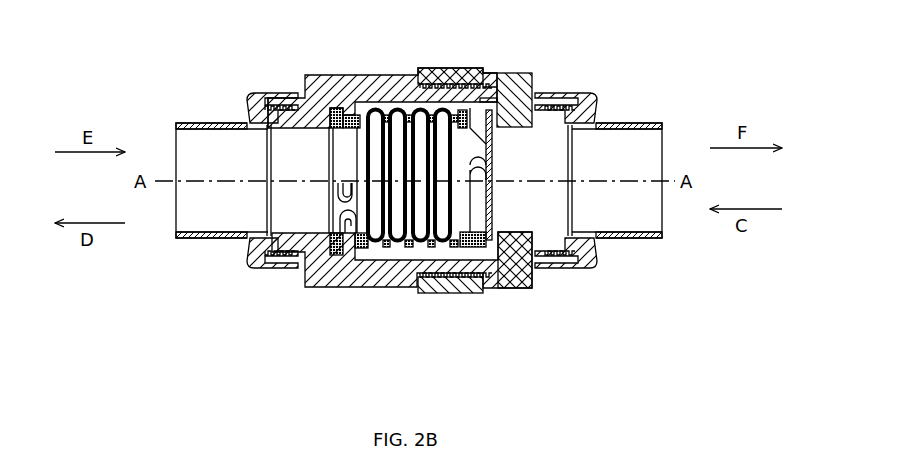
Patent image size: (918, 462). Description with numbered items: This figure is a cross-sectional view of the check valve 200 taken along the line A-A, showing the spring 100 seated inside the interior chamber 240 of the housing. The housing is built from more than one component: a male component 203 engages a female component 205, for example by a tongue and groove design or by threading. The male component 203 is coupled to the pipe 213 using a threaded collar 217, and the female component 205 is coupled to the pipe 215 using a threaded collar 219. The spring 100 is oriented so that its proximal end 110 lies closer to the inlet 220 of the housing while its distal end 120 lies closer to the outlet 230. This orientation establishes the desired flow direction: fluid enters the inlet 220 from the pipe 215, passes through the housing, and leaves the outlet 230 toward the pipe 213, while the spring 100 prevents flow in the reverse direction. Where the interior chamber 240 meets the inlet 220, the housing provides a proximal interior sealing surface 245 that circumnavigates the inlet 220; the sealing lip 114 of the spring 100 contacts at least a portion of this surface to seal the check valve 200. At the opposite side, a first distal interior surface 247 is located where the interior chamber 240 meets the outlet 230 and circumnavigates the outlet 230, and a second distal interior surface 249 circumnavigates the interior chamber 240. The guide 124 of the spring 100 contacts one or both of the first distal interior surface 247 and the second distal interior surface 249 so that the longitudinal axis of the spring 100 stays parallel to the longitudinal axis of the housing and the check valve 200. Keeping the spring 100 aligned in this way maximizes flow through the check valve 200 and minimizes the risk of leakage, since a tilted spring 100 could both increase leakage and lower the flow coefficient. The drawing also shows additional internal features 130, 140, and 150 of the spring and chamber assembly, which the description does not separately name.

The check valve 200 is at (423, 187).
The spring 100 is at (391, 186).
The proximal end 110 is at (494, 141).
The sealing lip 114 is at (490, 98).
The distal end 120 is at (328, 190).
The guide 124 is at (332, 130).
The retainer 130 is at (478, 195).
The hook member 140 is at (349, 223).
The bellows 150 is at (375, 252).
The male component 203 is at (281, 289).
The female component 205 is at (518, 289).
The pipe 213 is at (177, 148).
The pipe 215 is at (664, 226).
The threaded collar 217 is at (257, 270).
The threaded collar 219 is at (581, 270).
The inlet 220 is at (591, 275).
The outlet 230 is at (285, 148).
The interior chamber 240 is at (460, 252).
The proximal interior sealing surface 245 is at (533, 88).
The first distal interior surface 247 is at (303, 97).
The second distal interior surface 249 is at (340, 101).